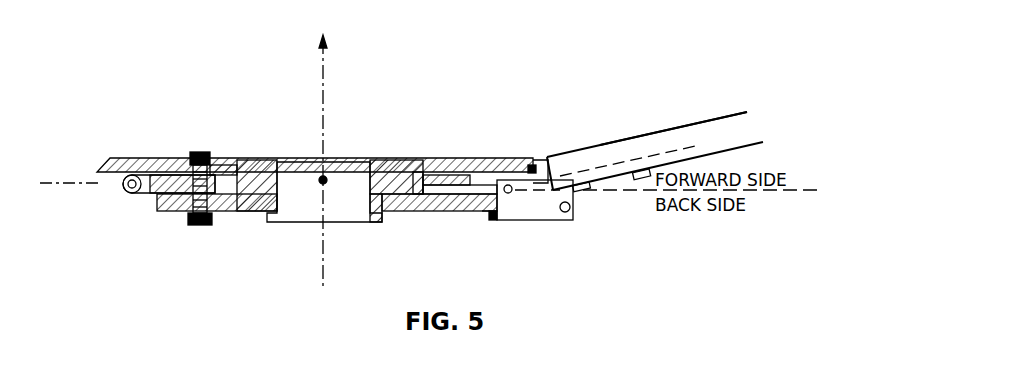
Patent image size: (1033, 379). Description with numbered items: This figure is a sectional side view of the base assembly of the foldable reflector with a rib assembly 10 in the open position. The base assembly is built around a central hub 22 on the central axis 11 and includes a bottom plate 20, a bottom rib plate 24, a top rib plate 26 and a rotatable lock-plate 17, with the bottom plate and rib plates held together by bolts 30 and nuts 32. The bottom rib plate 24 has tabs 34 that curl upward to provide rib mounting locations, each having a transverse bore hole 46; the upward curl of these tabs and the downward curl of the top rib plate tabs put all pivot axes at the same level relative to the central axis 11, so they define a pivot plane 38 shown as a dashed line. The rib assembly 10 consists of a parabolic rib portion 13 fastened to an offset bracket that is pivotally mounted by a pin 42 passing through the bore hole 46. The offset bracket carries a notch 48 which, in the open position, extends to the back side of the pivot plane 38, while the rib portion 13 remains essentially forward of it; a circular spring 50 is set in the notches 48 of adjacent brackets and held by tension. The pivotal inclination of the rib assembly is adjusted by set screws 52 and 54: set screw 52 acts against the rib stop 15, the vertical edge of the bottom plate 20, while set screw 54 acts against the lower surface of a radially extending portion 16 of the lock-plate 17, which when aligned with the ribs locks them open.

The rib assembly 10 is at (633, 129).
The central axis 11 is at (327, 282).
The rib portion 13 is at (704, 115).
The rib stop 15 is at (487, 213).
The radially extending portion 16 is at (113, 157).
The lock-plate 17 is at (422, 162).
The bottom plate 20 is at (252, 215).
The central hub 22 is at (260, 170).
The bottom rib plate 24 is at (153, 192).
The top rib plate 26 is at (219, 170).
The bolt 30 is at (194, 155).
The nut 32 is at (188, 224).
The tab 34 is at (120, 188).
The pivot plane 38 is at (83, 183).
The pin 42 is at (500, 162).
The bore hole 46 is at (127, 191).
The notch 48 is at (552, 208).
The circular spring 50 is at (572, 209).
The set screw 52 is at (535, 170).
The set screw 54 is at (493, 222).